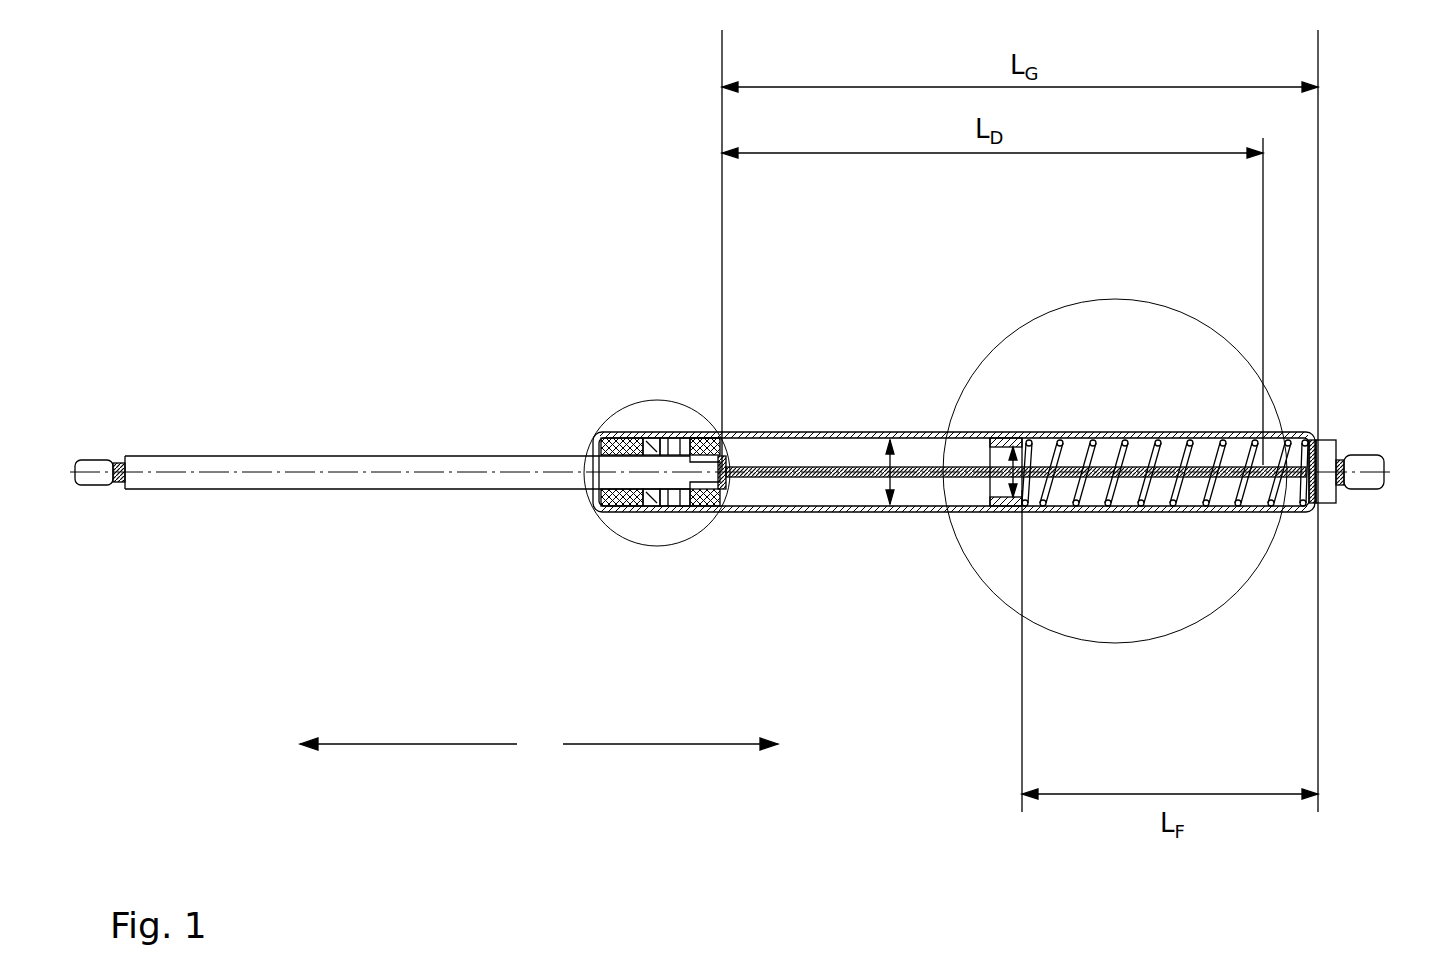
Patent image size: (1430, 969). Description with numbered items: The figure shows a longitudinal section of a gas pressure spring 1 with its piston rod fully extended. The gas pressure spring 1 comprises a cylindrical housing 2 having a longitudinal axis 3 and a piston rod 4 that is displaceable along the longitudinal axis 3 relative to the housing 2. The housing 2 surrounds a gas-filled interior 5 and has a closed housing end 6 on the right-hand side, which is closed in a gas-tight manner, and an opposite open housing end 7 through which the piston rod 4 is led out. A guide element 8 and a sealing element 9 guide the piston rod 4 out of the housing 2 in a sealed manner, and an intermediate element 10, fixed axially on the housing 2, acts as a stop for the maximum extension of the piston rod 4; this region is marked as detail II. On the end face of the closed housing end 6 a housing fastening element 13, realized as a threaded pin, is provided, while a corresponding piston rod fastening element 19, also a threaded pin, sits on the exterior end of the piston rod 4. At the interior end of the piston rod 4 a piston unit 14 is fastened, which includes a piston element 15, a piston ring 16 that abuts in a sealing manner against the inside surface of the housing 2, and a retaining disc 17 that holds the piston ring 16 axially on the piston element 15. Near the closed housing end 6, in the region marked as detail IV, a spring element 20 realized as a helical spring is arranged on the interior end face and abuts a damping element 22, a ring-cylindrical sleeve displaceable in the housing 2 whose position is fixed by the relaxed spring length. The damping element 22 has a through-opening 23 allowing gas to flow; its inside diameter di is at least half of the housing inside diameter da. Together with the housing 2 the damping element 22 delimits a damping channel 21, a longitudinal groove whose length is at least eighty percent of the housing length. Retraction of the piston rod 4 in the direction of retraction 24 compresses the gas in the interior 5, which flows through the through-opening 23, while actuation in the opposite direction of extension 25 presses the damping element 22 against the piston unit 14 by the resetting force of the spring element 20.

The gas pressure spring 1 is at (822, 346).
The housing 2 is at (893, 436).
The longitudinal axis 3 is at (258, 468).
The piston rod 4 is at (432, 478).
The interior 5 is at (840, 454).
The closed housing end 6 is at (1368, 414).
The open housing end 7 is at (583, 413).
The guide element 8 is at (600, 508).
The sealing element 9 is at (625, 508).
The intermediate element 10 is at (667, 508).
The housing fastening element 13 is at (1357, 480).
The piston unit 14 is at (705, 420).
The piston element 15 is at (693, 508).
The piston ring 16 is at (715, 508).
The retaining disc 17 is at (723, 508).
The piston rod fastening element 19 is at (92, 490).
The spring element 20 is at (1043, 508).
The damping channel 21 is at (920, 508).
The damping element 22 is at (1000, 508).
The through-opening 23 is at (995, 437).
The direction of retraction 24 is at (667, 745).
The direction of extension 25 is at (418, 745).
The detail II is at (655, 400).
The detail IV is at (1213, 343).
The inside diameter of the through-opening di is at (1013, 440).
The inside diameter of the housing da is at (888, 508).